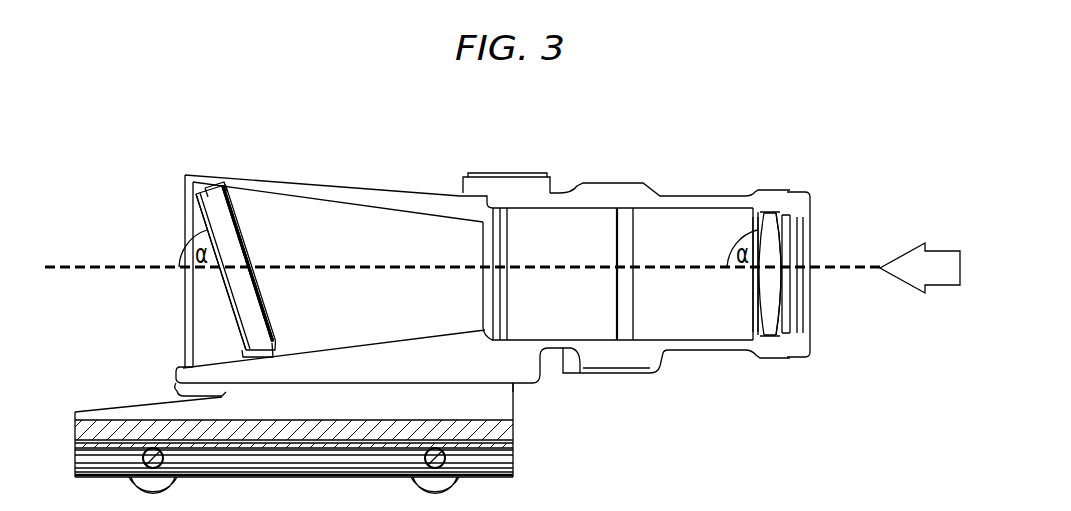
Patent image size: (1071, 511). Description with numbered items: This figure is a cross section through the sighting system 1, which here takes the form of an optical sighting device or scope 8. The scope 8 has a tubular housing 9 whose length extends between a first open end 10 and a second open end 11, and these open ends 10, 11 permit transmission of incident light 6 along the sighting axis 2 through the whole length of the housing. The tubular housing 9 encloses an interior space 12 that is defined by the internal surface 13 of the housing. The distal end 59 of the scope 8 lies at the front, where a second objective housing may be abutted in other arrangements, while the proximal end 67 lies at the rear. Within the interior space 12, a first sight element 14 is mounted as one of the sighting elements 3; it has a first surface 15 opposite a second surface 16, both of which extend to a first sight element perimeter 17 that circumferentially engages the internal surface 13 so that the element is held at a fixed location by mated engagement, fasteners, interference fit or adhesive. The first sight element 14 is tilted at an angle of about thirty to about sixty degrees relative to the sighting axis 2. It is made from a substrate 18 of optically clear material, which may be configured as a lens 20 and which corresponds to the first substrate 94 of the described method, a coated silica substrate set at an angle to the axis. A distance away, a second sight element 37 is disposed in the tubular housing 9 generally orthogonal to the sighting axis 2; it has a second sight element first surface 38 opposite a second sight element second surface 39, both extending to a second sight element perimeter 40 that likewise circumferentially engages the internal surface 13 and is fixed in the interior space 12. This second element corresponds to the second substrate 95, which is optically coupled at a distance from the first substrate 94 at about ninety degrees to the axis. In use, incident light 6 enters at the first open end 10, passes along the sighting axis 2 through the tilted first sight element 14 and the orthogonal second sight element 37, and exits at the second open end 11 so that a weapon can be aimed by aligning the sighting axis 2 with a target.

The sighting system 1 is at (439, 241).
The sighting axis 2 is at (73, 267).
The sighting elements 3 is at (284, 236).
The incident light 6 is at (920, 268).
The scope 8 is at (712, 142).
The tubular housing 9 is at (347, 190).
The first open end 10 is at (285, 267).
The second open end 11 is at (848, 274).
The interior space 12 is at (439, 263).
The internal surface 13 is at (375, 208).
The first sight element 14 is at (284, 236).
The first surface 15 is at (227, 294).
The second surface 16 is at (246, 219).
The first sight element perimeter 17 is at (204, 187).
The substrate 18 is at (277, 212).
The lens 20 is at (240, 219).
The second sight element 37 is at (770, 345).
The second sight element first surface 38 is at (757, 303).
The second sight element second surface 39 is at (782, 318).
The second sight element perimeter 40 is at (766, 212).
The distal end 59 is at (185, 212).
The proximal end 67 is at (810, 258).
The first substrate 94 is at (222, 195).
The second substrate 95 is at (768, 320).